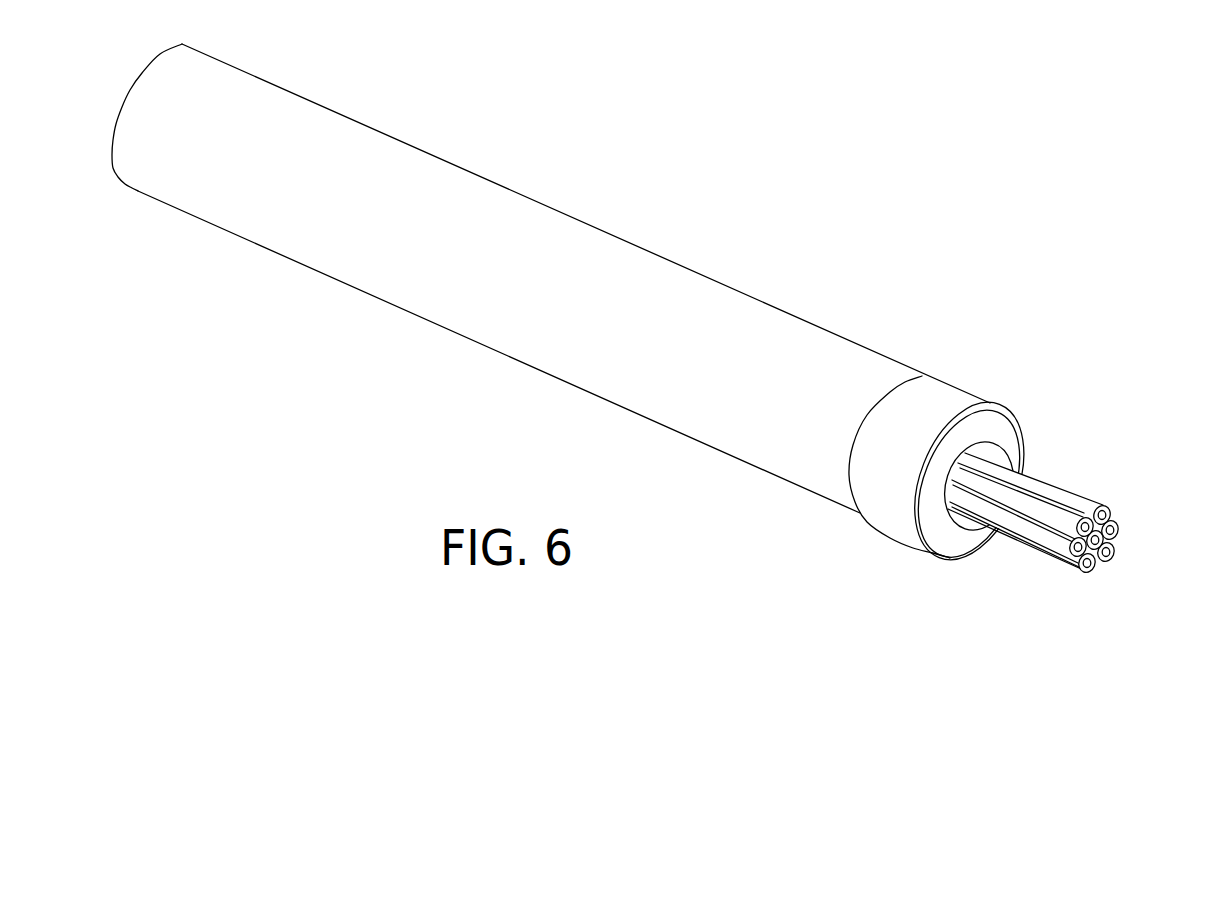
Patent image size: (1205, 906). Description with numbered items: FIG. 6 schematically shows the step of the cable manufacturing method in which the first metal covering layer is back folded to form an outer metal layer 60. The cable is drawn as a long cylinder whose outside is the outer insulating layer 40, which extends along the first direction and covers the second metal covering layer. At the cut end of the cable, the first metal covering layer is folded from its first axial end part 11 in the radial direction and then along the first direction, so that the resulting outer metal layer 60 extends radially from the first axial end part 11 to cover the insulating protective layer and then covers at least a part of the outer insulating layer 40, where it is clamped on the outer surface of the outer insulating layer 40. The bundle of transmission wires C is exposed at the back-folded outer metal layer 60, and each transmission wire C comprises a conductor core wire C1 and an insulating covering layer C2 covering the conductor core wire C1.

The outer insulating layer 40 is at (673, 260).
The outer metal layer 60 is at (958, 386).
The first axial end part 11 is at (980, 447).
The transmission wire C is at (1046, 477).
The conductor core wire C1 is at (1105, 507).
The insulating covering layer C2 is at (1108, 514).